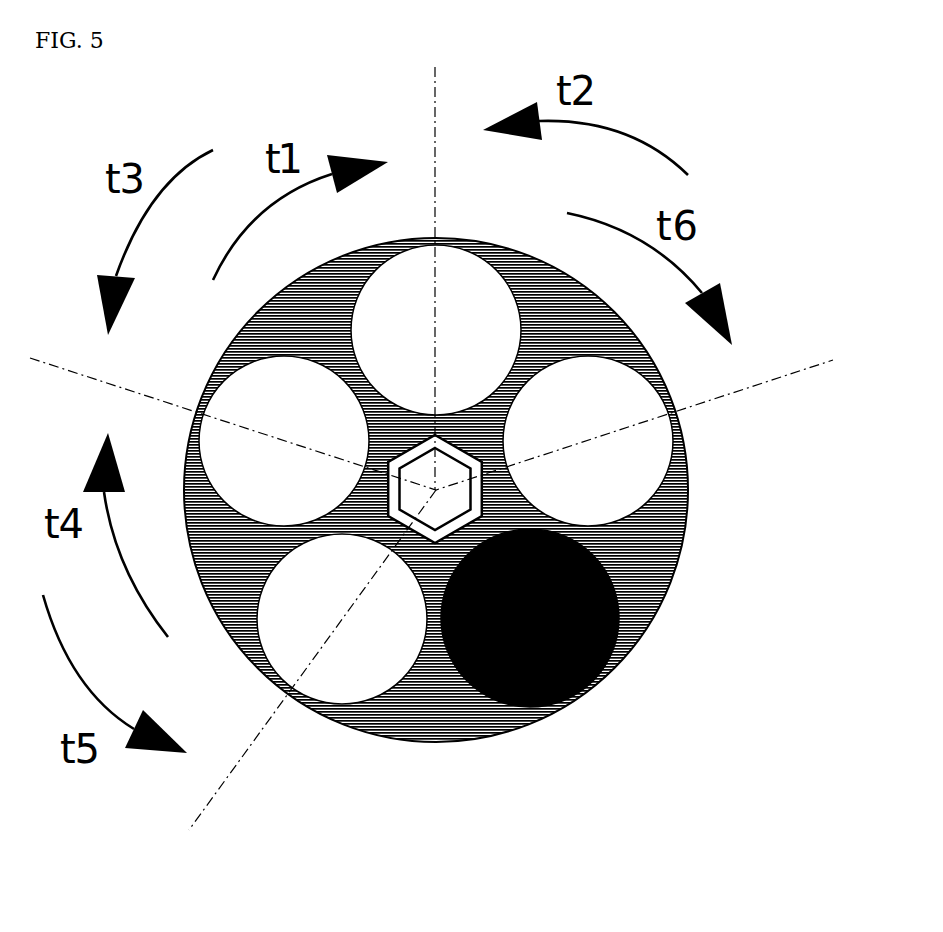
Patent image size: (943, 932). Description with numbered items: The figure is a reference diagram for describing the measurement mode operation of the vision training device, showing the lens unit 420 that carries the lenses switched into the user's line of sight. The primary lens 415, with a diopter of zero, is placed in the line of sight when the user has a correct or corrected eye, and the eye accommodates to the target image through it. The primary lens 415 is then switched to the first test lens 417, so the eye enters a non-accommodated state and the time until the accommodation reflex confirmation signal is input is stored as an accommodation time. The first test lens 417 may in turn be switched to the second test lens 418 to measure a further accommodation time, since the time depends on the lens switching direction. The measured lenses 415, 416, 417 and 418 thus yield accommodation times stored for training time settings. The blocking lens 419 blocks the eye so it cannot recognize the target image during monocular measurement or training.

The primary lens 415 is at (213, 378).
The lens 416 is at (243, 658).
The first test lens 417 is at (467, 258).
The second test lens 418 is at (665, 443).
The blocking lens 419 is at (590, 692).
The lens unit 420 is at (675, 575).